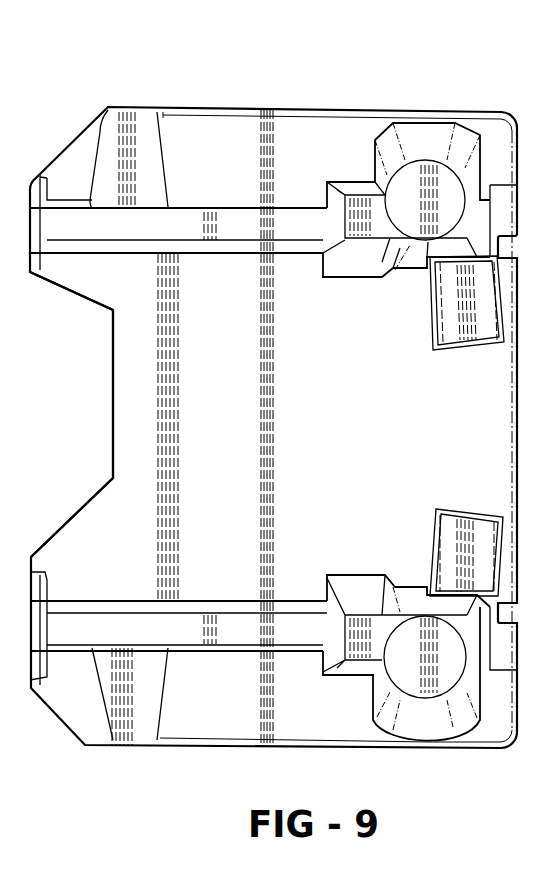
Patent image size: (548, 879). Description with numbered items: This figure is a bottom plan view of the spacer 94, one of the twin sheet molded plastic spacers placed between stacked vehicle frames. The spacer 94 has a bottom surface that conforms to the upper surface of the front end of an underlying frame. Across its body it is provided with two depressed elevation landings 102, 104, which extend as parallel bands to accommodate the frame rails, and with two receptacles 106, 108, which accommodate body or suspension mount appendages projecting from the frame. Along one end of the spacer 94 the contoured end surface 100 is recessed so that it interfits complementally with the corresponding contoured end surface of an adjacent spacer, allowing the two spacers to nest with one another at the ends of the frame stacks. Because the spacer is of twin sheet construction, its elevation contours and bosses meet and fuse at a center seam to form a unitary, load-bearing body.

The spacer 94 is at (284, 108).
The contoured end surface 100 is at (113, 393).
The depressed elevation landing 102 is at (225, 625).
The depressed elevation landing 104 is at (232, 230).
The receptacle 106 is at (441, 193).
The receptacle 108 is at (450, 675).